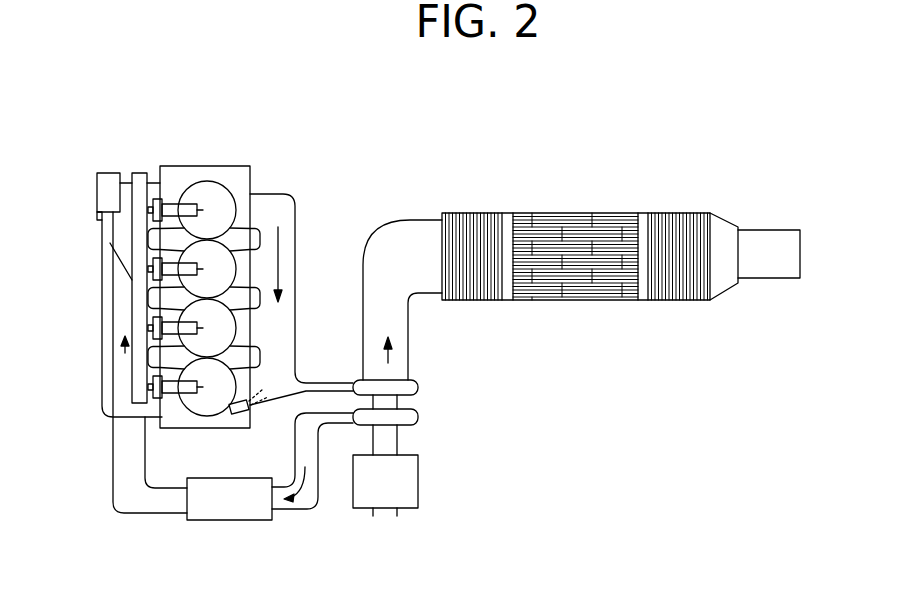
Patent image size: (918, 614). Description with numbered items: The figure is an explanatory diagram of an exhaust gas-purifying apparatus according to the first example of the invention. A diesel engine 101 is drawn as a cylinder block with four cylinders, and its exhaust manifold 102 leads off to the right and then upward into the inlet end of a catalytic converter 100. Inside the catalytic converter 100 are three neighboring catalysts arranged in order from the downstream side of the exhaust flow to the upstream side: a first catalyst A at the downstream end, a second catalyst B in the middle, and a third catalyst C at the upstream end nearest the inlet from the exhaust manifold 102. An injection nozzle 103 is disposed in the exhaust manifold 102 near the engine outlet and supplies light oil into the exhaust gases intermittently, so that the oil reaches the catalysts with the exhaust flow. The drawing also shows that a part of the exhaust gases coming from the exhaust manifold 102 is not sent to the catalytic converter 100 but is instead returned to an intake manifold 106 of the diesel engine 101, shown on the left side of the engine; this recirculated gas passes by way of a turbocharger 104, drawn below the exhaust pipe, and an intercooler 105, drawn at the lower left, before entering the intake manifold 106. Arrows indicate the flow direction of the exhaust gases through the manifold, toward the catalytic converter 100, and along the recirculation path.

The catalytic converter 100 is at (722, 288).
The diesel engine 101 is at (173, 172).
The exhaust manifold 102 is at (272, 196).
The injection nozzle 103 is at (235, 413).
The turbocharger 104 is at (418, 414).
The intercooler 105 is at (223, 512).
The intake manifold 106 is at (120, 295).
The first catalyst A is at (672, 213).
The second catalyst B is at (570, 230).
The third catalyst C is at (462, 213).